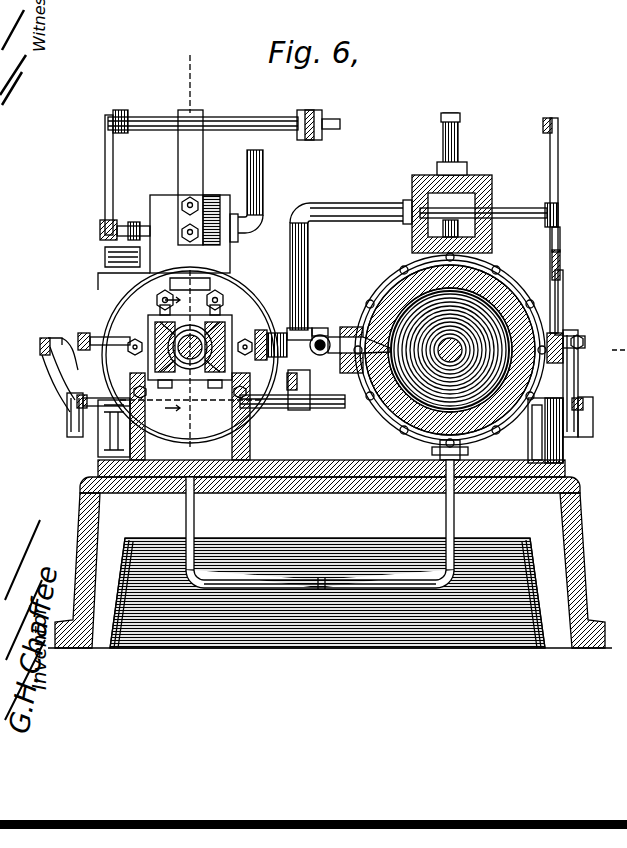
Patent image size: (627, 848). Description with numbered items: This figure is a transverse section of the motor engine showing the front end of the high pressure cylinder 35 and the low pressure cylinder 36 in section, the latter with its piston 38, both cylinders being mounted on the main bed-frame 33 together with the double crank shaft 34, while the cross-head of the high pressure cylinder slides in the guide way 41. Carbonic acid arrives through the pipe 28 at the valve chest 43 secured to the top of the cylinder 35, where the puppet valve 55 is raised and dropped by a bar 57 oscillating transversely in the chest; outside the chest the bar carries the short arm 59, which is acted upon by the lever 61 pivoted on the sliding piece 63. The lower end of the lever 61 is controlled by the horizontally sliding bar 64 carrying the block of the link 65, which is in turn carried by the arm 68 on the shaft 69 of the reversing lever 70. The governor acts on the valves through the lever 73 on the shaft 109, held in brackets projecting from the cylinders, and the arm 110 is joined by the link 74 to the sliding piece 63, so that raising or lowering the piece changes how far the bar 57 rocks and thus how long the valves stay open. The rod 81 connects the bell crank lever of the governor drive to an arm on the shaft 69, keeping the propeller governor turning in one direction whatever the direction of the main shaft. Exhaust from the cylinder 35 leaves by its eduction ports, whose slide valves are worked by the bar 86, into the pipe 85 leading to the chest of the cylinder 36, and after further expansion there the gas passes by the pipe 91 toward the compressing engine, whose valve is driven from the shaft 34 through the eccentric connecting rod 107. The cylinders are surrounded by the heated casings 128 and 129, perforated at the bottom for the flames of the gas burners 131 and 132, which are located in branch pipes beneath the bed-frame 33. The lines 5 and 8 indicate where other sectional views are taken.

The section line 5 is at (191, 248).
The section line 8 is at (612, 350).
The pipe 28 is at (268, 168).
The main bed-frame 33 is at (330, 554).
The double crank shaft 34 is at (437, 350).
The high pressure cylinder 35 is at (128, 312).
The low pressure cylinder 36 is at (485, 312).
The piston 38 is at (382, 292).
The guide way 41 is at (232, 320).
The valve chest 43 is at (172, 192).
The puppet valve 55 is at (415, 190).
The bar 57 is at (133, 222).
The short arm 59 is at (100, 228).
The lever 61 is at (563, 292).
The sliding piece 63 is at (560, 262).
The horizontally sliding bar 64 is at (95, 338).
The link 65 is at (92, 437).
The arm 68 is at (67, 425).
The shaft 69 is at (270, 410).
The reversing lever 70 is at (452, 113).
The lever 73 is at (310, 112).
The link 74 is at (105, 175).
The rod 81 is at (310, 380).
The pipe 85 is at (308, 278).
The bar 86 is at (266, 330).
The pipe 91 is at (320, 333).
The connecting rod 107 is at (44, 347).
The shaft 109 is at (240, 108).
The arm 110 is at (122, 115).
The casing 128 is at (212, 292).
The casing 129 is at (430, 445).
The gas burner 131 is at (194, 500).
The gas burner 132 is at (452, 500).